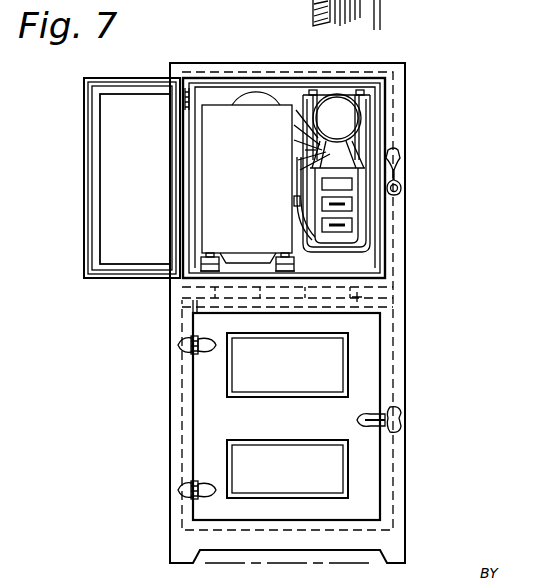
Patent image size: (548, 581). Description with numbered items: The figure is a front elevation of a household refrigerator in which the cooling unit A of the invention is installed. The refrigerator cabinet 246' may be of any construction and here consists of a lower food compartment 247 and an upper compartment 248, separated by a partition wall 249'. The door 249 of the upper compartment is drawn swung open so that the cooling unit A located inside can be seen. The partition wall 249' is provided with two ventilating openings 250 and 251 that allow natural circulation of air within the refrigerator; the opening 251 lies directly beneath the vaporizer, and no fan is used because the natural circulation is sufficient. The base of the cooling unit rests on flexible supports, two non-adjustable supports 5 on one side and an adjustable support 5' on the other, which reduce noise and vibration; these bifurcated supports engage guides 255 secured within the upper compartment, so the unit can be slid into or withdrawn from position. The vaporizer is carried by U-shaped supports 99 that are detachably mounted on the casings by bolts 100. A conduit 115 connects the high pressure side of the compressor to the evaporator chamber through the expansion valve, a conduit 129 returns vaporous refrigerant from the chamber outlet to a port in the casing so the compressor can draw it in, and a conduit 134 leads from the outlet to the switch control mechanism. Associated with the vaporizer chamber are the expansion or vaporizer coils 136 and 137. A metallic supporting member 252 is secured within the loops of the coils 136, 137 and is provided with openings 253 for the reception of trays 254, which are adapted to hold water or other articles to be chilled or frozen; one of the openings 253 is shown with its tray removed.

The refrigerator cabinet 246' is at (311, 298).
The upper compartment 248 is at (209, 96).
The conduit 134 is at (298, 118).
The cooling unit A is at (313, 97).
The expansion coil 136 is at (318, 136).
The conduit 129 is at (322, 145).
The expansion coil 137 is at (305, 150).
The conduit 115 is at (310, 150).
The bolt 100 is at (294, 200).
The metallic supporting member 252 is at (348, 172).
The opening 253 is at (352, 185).
The tray 254 is at (352, 224).
The U-shaped support 99 is at (366, 241).
The ventilating opening 251 is at (398, 288).
The door 249 is at (97, 178).
The guide 255 is at (205, 265).
The adjustable support 5' is at (219, 248).
The non-adjustable support 5 is at (281, 248).
The ventilating opening 250 is at (188, 296).
The partition wall 249' is at (148, 399).
The lower food compartment 247 is at (205, 432).